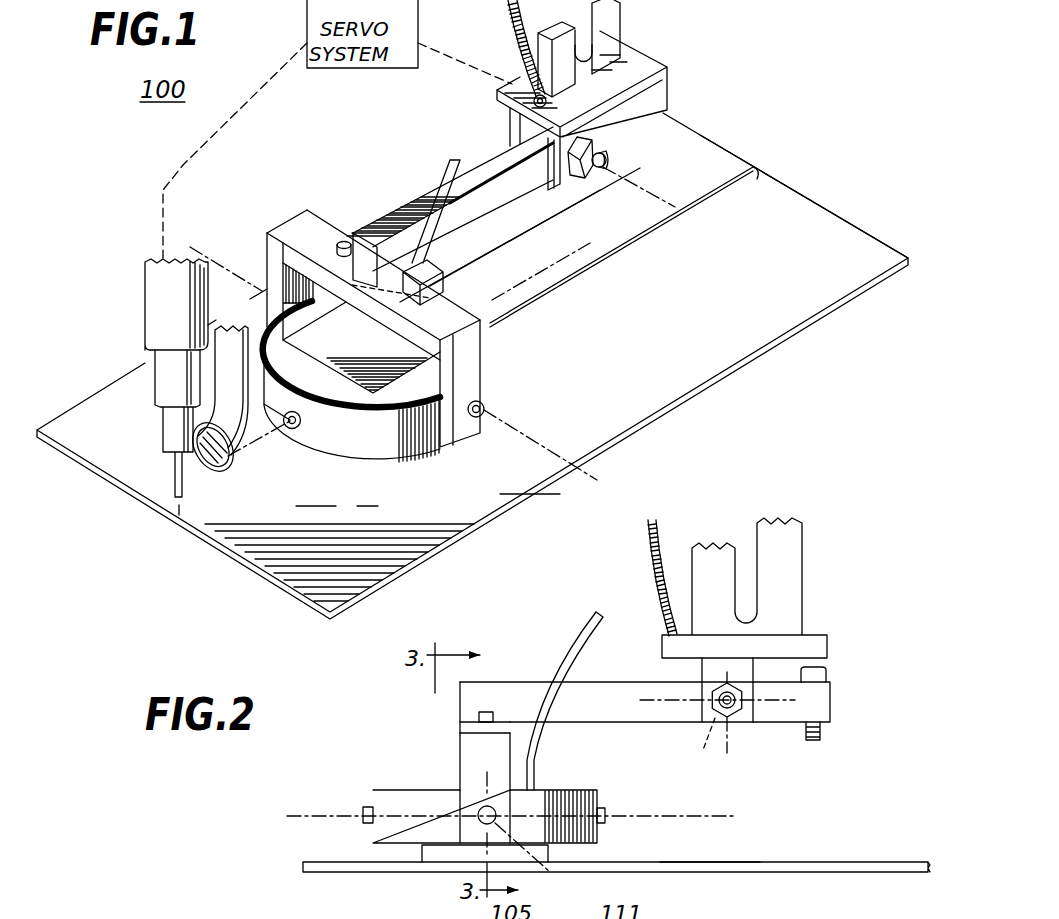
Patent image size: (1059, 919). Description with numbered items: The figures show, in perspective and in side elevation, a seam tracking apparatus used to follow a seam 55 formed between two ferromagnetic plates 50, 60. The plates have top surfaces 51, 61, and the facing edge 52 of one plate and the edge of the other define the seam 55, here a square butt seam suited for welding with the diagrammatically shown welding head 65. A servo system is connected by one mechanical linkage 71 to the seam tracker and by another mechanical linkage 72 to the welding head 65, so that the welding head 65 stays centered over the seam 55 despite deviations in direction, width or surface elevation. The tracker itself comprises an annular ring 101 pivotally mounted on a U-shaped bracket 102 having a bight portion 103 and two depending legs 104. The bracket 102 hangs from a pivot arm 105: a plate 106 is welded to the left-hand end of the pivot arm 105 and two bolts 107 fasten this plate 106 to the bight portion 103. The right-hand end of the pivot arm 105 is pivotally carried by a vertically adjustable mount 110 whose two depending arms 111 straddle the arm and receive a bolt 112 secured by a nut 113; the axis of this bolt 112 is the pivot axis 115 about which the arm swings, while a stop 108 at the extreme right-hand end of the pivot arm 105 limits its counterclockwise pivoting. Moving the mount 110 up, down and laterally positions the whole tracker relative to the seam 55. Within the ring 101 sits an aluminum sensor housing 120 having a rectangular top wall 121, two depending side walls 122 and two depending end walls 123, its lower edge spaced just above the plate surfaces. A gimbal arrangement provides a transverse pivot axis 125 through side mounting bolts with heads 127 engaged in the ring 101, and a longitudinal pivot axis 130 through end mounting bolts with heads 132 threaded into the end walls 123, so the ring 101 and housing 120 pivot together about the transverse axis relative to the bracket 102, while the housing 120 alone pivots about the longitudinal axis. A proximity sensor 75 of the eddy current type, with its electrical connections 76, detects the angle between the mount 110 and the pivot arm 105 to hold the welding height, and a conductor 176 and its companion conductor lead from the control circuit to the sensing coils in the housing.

In FIG. 1, the plate 50 is at (700, 157).
In FIG. 1, the top surface 51 is at (668, 170).
In FIG. 1, the facing edge 52 is at (755, 166).
In FIG. 1, the seam 55 is at (730, 190).
In FIG. 1, the plate 60 is at (820, 207).
In FIG. 2, the plate 60 is at (778, 857).
In FIG. 1, the top surface 61 is at (756, 223).
In FIG. 2, the top surface 61 is at (687, 863).
In FIG. 1, the welding head 65 is at (143, 422).
In FIG. 1, the mechanical linkage 71 is at (468, 58).
In FIG. 1, the mechanical linkage 72 is at (183, 165).
In FIG. 1, the proximity sensor 75 is at (512, 88).
In FIG. 2, the electrical connections 76 is at (665, 542).
In FIG. 1, the ring 101 is at (378, 440).
In FIG. 2, the ring 101 is at (400, 827).
In FIG. 1, the U-shaped bracket 102 is at (312, 227).
In FIG. 2, the U-shaped bracket 102 is at (460, 745).
In FIG. 1, the bight portion 103 is at (287, 233).
In FIG. 1, the depending legs 104 is at (265, 253).
In FIG. 2, the depending legs 104 is at (470, 770).
In FIG. 1, the pivot arm 105 is at (497, 163).
In FIG. 2, the pivot arm 105 is at (583, 692).
In FIG. 1, the plate 106 is at (353, 233).
In FIG. 2, the plate 106 is at (461, 726).
In FIG. 1, the bolts 107 is at (343, 238).
In FIG. 2, the bolts 107 is at (487, 707).
In FIG. 2, the stop 108 is at (823, 673).
In FIG. 1, the vertically adjustable mount 110 is at (630, 33).
In FIG. 2, the vertically adjustable mount 110 is at (810, 558).
In FIG. 1, the depending arms 111 is at (520, 128).
In FIG. 2, the depending arms 111 is at (727, 690).
In FIG. 1, the bolt 112 is at (597, 170).
In FIG. 2, the bolt 112 is at (737, 718).
In FIG. 1, the nut 113 is at (582, 173).
In FIG. 2, the nut 113 is at (713, 708).
In FIG. 1, the pivot axis 115 is at (645, 195).
In FIG. 2, the pivot axis 115 is at (717, 721).
In FIG. 1, the sensor housing 120 is at (330, 335).
In FIG. 2, the sensor housing 120 is at (420, 850).
In FIG. 1, the top wall 121 is at (373, 347).
In FIG. 1, the side walls 122 is at (488, 478).
In FIG. 2, the side walls 122 is at (580, 850).
In FIG. 1, the end walls 123 is at (331, 382).
In FIG. 1, the transverse pivot axis 125 is at (543, 440).
In FIG. 2, the transverse pivot axis 125 is at (544, 860).
In FIG. 1, the heads 127 is at (481, 418).
In FIG. 2, the heads 127 is at (480, 823).
In FIG. 1, the longitudinal pivot axis 130 is at (258, 448).
In FIG. 2, the longitudinal pivot axis 130 is at (287, 803).
In FIG. 1, the heads 132 is at (295, 430).
In FIG. 2, the heads 132 is at (365, 806).
In FIG. 1, the conductor 176 is at (447, 160).
In FIG. 2, the conductor 176 is at (597, 613).